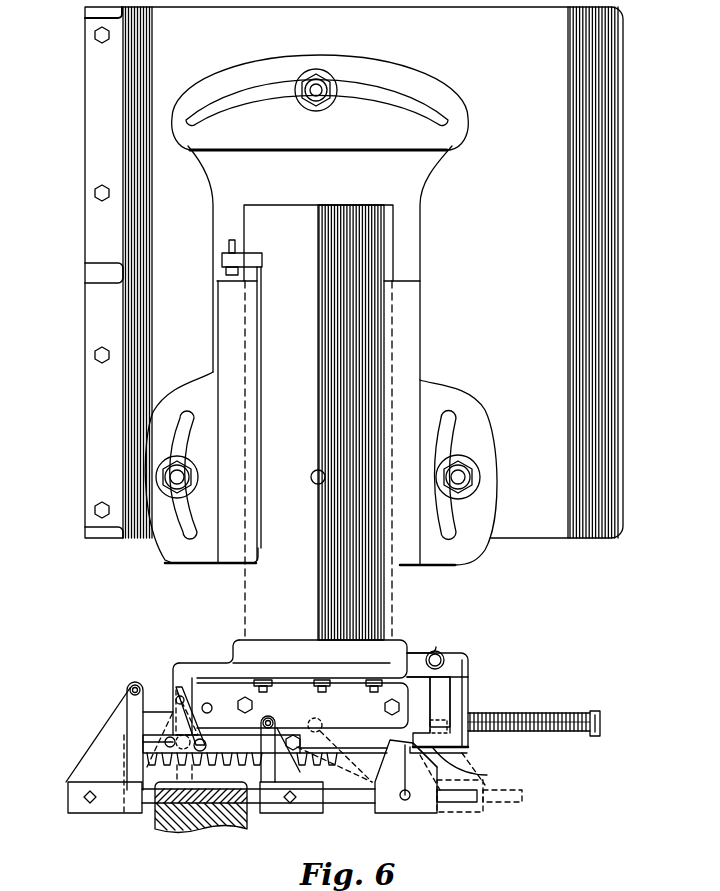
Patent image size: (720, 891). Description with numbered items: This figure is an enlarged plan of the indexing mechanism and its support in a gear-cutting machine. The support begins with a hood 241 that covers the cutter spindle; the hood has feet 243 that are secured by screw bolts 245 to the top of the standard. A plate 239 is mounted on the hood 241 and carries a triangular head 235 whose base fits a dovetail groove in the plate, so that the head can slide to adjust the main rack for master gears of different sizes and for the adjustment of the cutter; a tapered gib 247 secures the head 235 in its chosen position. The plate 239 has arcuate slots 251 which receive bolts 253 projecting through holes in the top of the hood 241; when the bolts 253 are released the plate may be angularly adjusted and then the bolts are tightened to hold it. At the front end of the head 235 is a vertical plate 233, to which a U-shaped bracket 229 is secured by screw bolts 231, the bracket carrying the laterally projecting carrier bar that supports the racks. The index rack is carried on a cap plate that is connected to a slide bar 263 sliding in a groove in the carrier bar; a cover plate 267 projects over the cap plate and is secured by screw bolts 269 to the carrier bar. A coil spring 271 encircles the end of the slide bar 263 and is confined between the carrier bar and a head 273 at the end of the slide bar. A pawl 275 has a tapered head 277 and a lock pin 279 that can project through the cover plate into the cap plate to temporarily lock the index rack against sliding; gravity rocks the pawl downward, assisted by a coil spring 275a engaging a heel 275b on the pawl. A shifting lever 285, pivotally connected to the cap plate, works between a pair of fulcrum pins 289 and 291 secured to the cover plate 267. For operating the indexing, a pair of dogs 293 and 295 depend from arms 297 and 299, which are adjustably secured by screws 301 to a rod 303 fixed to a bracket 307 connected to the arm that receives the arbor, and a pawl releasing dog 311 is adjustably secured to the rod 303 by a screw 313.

The U-shaped bracket 229 is at (233, 650).
The screw bolts 231 is at (366, 693).
The vertical plate 233 is at (368, 650).
The triangular head 235 is at (311, 212).
The plate 239 is at (421, 232).
The hood 241 is at (531, 542).
The feet 243 is at (93, 163).
The screw bolts 245 is at (94, 36).
The tapered gib 247 is at (260, 262).
The arcuate slots 251 is at (360, 96).
The bolts 253 is at (322, 84).
The slide bar 263 is at (528, 733).
The cover plate 267 is at (410, 697).
The screw bolts 269 is at (385, 705).
The coil spring 271 is at (545, 713).
The head 273 is at (597, 714).
The pawl 275 is at (440, 698).
The coil spring 275a is at (446, 658).
The heel 275b is at (447, 658).
The tapered head 277 is at (488, 775).
The lock pin 279 is at (470, 745).
The shifting lever 285 is at (196, 681).
The fulcrum pin 289 is at (177, 699).
The fulcrum pin 291 is at (209, 705).
The dog 293 is at (129, 688).
The dog 295 is at (262, 723).
The arm 297 is at (104, 727).
The arm 299 is at (296, 803).
The screws 301 is at (90, 806).
The rod 303 is at (348, 804).
The bracket 307 is at (200, 830).
The pawl releasing dog 311 is at (409, 769).
The screw 313 is at (405, 801).